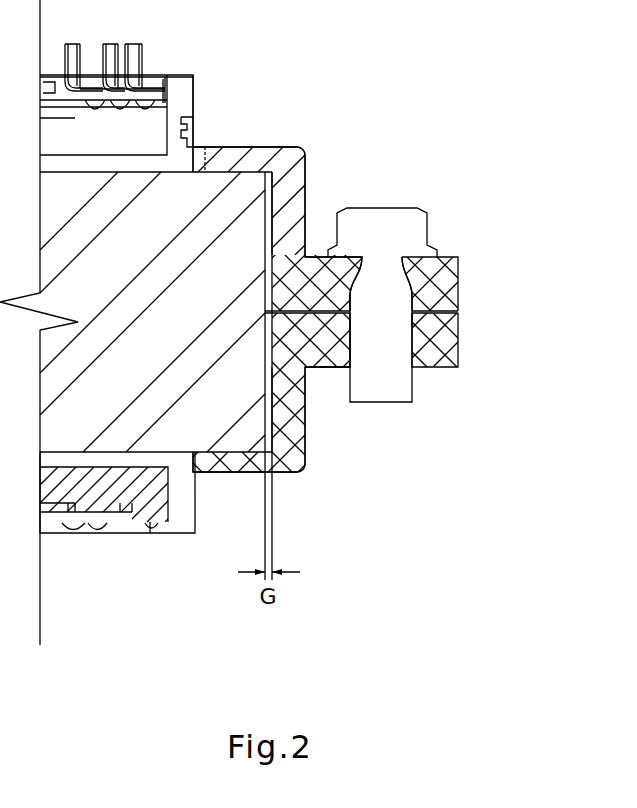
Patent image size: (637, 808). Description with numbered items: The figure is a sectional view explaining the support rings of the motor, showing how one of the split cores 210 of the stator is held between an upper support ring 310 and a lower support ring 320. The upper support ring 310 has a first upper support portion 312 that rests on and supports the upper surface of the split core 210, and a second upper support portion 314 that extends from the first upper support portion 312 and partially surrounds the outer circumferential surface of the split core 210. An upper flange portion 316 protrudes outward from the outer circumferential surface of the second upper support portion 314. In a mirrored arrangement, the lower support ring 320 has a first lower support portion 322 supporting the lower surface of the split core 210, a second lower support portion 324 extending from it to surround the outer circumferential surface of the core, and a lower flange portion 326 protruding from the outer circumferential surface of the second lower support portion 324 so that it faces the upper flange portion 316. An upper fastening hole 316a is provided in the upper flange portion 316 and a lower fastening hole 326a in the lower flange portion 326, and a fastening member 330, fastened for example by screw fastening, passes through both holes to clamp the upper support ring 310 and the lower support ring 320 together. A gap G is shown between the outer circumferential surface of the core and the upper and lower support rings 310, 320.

The split core 210 is at (120, 378).
The upper support ring 310 is at (348, 207).
The first upper support portion 312 is at (236, 162).
The second upper support portion 314 is at (322, 238).
The upper flange portion 316 is at (458, 288).
The upper fastening hole 316a is at (412, 300).
The lower support ring 320 is at (323, 386).
The first lower support portion 322 is at (238, 460).
The second lower support portion 324 is at (303, 427).
The lower flange portion 326 is at (458, 340).
The lower fastening hole 326a is at (412, 323).
The fastening member 330 is at (380, 403).